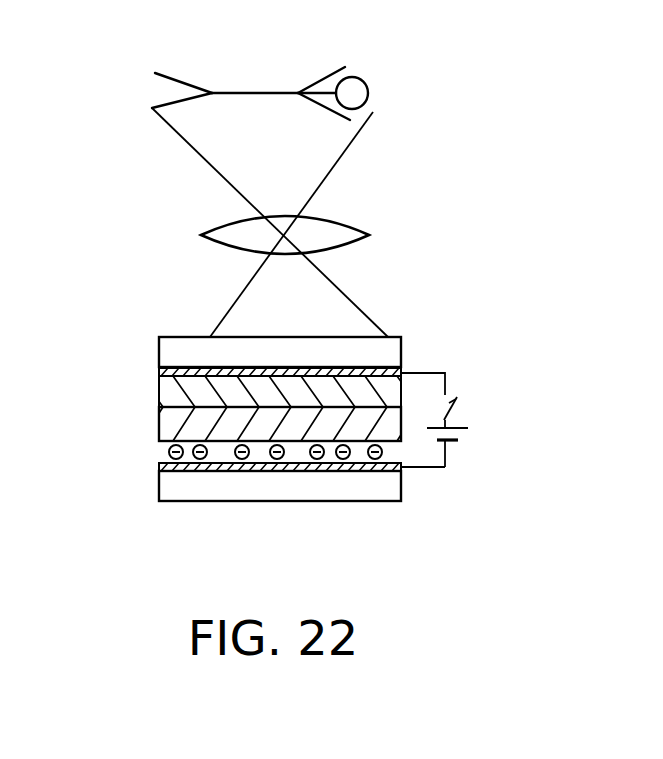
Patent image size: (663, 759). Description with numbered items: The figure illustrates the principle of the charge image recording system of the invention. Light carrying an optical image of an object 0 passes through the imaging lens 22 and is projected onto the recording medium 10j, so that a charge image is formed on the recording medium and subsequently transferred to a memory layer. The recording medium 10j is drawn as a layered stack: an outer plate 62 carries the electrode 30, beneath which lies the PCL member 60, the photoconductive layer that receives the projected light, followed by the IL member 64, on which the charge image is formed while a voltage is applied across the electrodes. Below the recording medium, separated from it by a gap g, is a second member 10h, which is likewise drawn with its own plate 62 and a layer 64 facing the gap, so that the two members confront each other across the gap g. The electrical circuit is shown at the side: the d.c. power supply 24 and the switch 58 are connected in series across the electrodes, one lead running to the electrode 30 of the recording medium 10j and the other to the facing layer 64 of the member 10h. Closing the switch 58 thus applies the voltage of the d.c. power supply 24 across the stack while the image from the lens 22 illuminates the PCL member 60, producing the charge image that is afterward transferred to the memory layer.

The object 0 is at (270, 92).
The imaging lens 22 is at (342, 232).
The recording medium 10j is at (313, 327).
The transparent plate / substrate 62 is at (167, 338).
The electrode 30 is at (160, 373).
The PCL member 60 is at (160, 395).
The IL member 64 is at (160, 433).
The gap g is at (391, 452).
The switch 58 is at (465, 405).
The d.c. power supply 24 is at (462, 443).
The receiving member (lower assembly) 10h is at (348, 508).